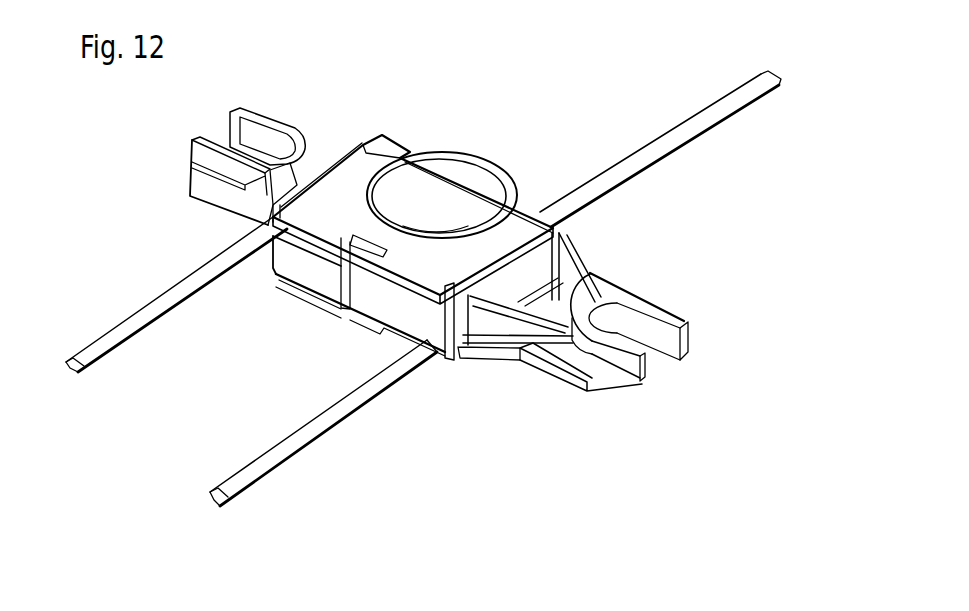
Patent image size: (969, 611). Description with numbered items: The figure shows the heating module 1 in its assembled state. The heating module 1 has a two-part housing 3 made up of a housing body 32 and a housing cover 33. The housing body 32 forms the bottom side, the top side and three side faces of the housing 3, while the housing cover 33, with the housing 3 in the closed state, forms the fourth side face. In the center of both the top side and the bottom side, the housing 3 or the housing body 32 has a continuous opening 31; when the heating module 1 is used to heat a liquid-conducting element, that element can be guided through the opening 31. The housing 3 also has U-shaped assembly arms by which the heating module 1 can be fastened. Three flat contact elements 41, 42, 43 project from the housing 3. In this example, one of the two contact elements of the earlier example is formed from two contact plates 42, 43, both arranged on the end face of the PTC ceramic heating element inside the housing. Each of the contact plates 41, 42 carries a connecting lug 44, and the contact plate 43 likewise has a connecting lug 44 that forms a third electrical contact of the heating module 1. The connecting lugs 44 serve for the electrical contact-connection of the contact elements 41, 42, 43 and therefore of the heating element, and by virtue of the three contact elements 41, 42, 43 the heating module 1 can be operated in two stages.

The heating module 1 is at (569, 87).
The housing 3 is at (511, 439).
The opening 31 is at (441, 232).
The housing body 32 is at (453, 268).
The housing cover 33 is at (424, 318).
The contact element 41 is at (402, 364).
The contact plate 42 is at (262, 241).
The contact plate 43 is at (574, 208).
The connecting lug 44 is at (88, 352).